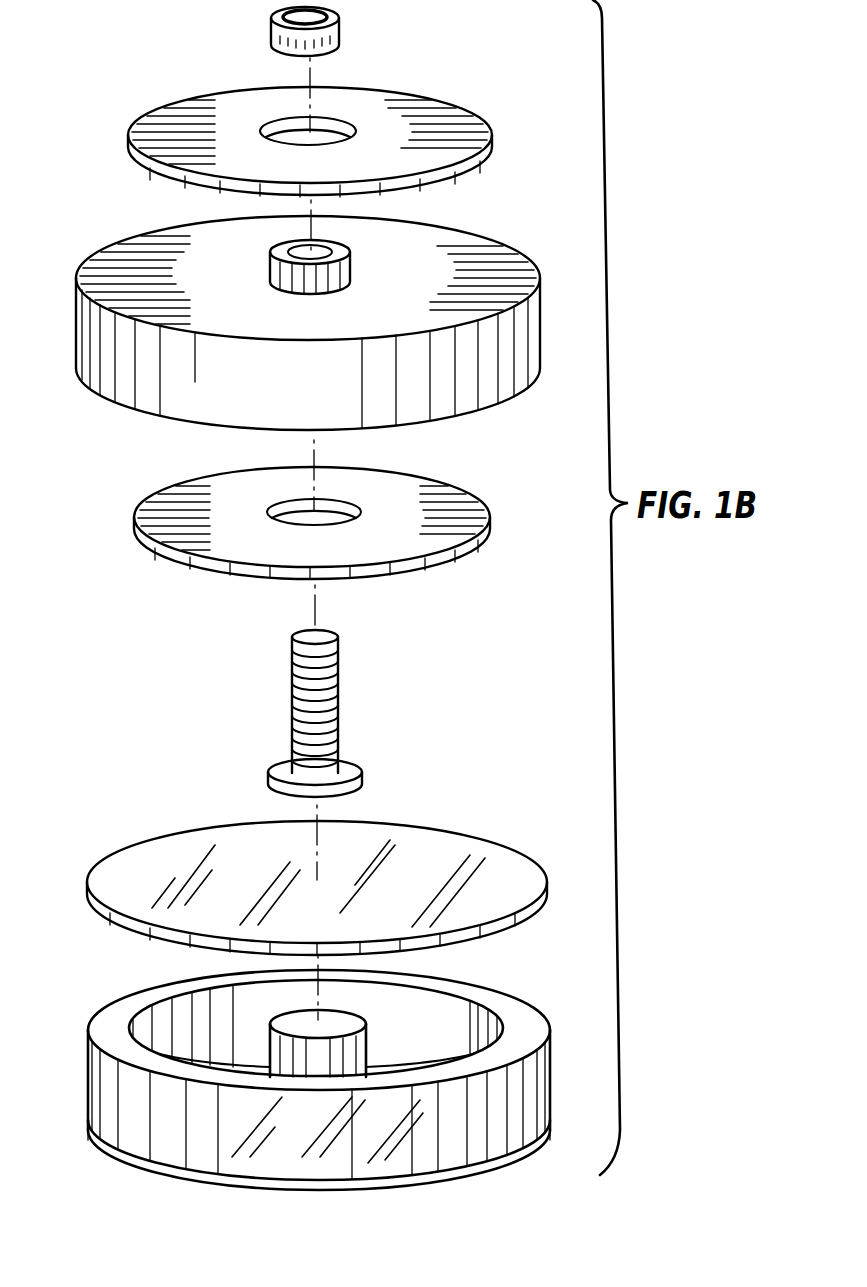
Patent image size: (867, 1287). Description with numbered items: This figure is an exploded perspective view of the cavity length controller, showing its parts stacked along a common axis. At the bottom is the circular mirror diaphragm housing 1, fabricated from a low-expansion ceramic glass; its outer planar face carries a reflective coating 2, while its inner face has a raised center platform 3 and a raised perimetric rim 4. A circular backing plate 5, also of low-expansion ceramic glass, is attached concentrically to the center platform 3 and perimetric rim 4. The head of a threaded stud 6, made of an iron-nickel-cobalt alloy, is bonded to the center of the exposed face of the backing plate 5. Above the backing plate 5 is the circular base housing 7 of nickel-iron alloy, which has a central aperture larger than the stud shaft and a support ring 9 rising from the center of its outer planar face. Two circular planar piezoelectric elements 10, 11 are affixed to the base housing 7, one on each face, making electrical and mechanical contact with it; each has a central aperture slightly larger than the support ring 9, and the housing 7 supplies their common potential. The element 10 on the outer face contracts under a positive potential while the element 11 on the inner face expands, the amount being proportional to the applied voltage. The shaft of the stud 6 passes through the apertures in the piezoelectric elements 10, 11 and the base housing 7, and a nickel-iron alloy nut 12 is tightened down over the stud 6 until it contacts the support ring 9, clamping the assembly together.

The circular mirror diaphragm housing 1 is at (66, 1010).
The reflective coating 2 is at (158, 1170).
The raised center platform 3 is at (368, 1042).
The raised perimetric rim 4 is at (510, 1000).
The circular backing plate 5 is at (487, 842).
The threaded stud 6 is at (338, 704).
The circular base housing 7 is at (66, 265).
The support ring 9 is at (352, 256).
The piezoelectric element 10 is at (487, 130).
The piezoelectric element 11 is at (480, 500).
The nut 12 is at (340, 28).